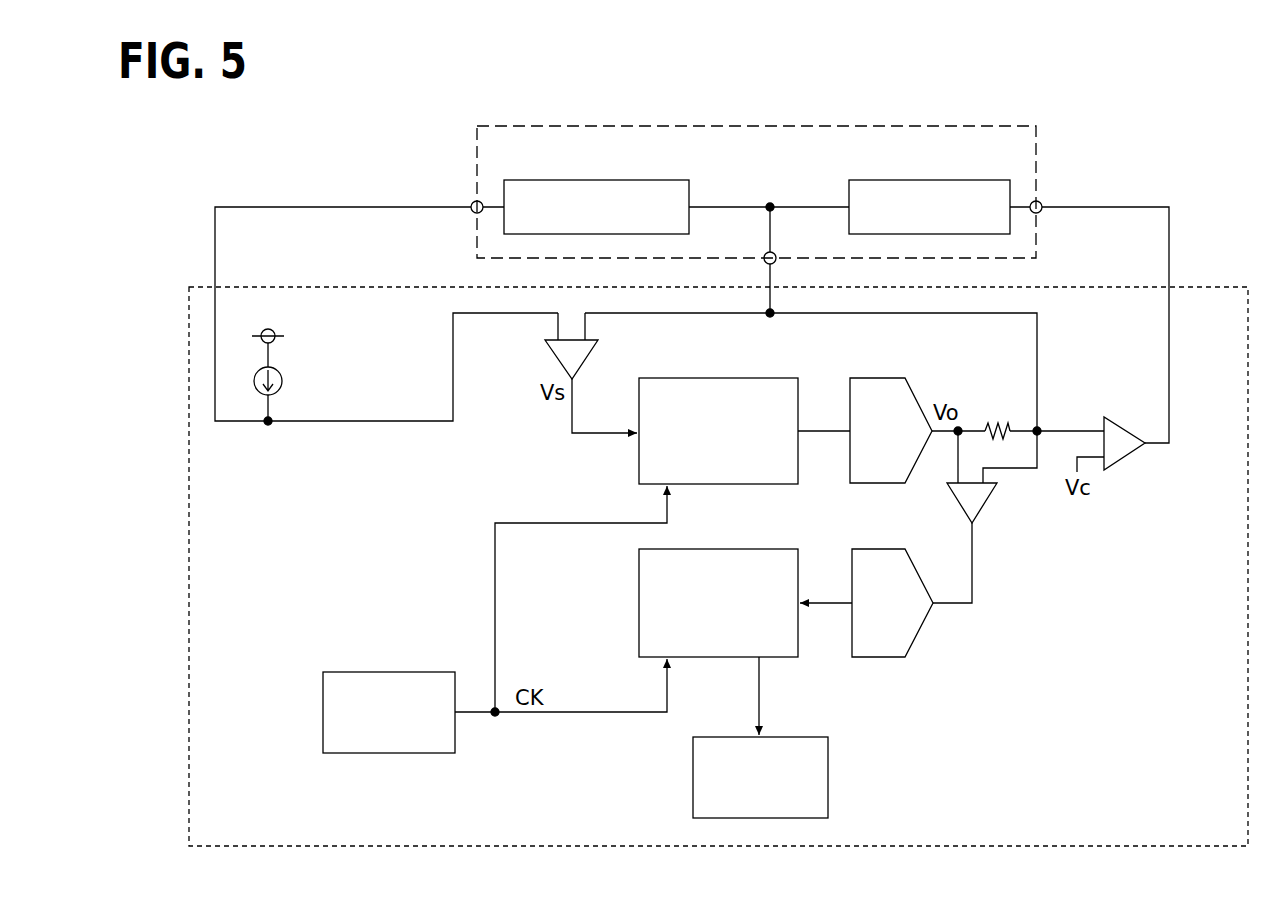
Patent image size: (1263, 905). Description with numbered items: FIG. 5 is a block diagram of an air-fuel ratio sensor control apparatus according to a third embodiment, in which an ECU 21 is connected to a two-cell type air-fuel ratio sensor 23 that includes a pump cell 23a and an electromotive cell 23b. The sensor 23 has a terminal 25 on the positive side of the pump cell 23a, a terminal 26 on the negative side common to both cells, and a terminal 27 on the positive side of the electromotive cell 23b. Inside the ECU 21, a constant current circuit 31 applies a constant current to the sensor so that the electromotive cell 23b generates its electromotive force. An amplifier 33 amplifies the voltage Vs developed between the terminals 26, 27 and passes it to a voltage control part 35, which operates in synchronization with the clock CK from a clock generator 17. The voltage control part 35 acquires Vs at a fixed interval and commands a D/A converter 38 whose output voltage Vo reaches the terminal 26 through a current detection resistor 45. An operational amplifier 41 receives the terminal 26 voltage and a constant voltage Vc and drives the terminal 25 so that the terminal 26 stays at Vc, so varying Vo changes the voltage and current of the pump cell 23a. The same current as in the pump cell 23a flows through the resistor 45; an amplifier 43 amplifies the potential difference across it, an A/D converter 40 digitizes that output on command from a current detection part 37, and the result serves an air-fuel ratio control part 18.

The clock generator 17 is at (403, 672).
The air-fuel ratio control part 18 is at (828, 766).
The ECU 21 is at (1203, 287).
The air-fuel ratio sensor 23 is at (1040, 170).
The pump cell 23a is at (955, 180).
The electromotive cell 23b is at (622, 180).
The terminal 25 is at (1041, 212).
The terminal 26 is at (764, 256).
The terminal 27 is at (473, 213).
The constant current circuit 31 is at (282, 381).
The amplifier 33 is at (555, 360).
The voltage control part 35 is at (770, 378).
The current detection part 37 is at (770, 549).
The D/A converter 38 is at (878, 378).
The A/D converter 40 is at (878, 549).
The operational amplifier 41 is at (1117, 425).
The amplifier 43 is at (955, 508).
The current detection resistor 45 is at (995, 425).